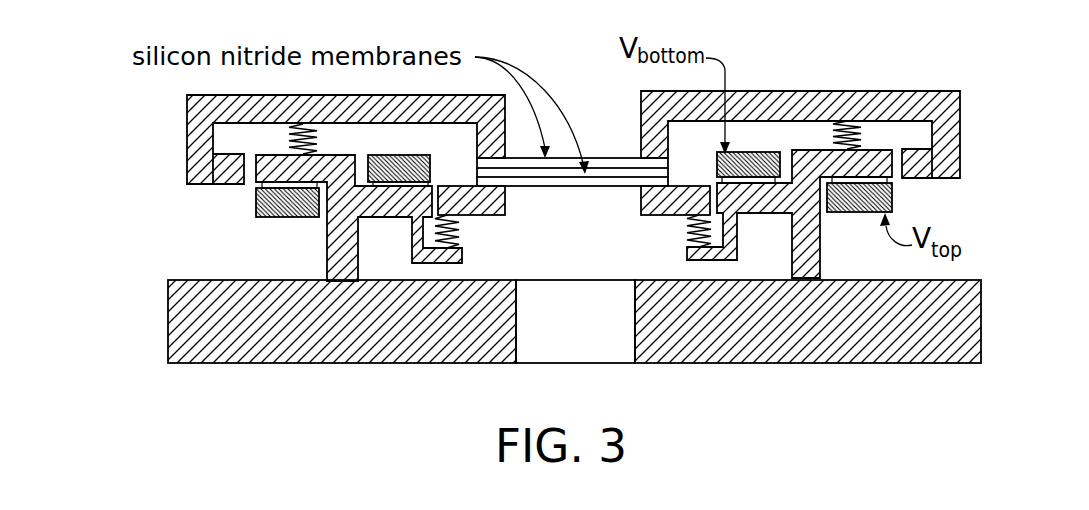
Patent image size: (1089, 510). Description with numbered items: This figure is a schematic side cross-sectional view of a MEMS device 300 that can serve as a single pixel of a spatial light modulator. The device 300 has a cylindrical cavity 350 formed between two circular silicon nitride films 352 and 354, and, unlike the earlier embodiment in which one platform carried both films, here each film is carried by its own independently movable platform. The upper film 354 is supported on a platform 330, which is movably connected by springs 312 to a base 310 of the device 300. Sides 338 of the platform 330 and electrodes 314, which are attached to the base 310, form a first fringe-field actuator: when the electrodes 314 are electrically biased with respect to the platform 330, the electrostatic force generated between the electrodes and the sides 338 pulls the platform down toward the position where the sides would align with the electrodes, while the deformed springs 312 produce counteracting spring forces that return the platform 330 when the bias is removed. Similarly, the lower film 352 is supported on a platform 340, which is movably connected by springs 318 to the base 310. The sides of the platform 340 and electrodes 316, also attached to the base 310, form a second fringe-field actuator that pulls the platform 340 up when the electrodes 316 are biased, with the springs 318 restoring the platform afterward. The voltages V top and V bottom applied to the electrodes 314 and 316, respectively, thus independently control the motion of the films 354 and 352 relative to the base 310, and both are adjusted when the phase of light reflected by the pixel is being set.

The MEMS device 300 is at (98, 428).
The base 310 is at (983, 283).
The springs 312 is at (288, 140).
The electrodes 314 is at (292, 218).
The electrodes 316 is at (379, 155).
The springs 318 is at (461, 233).
The platform 330 is at (186, 118).
The sides of platform 338 is at (222, 185).
The platform 340 is at (452, 186).
The cylindrical cavity 350 is at (549, 200).
The SiN film 352 is at (606, 187).
The SiN film 354 is at (605, 157).